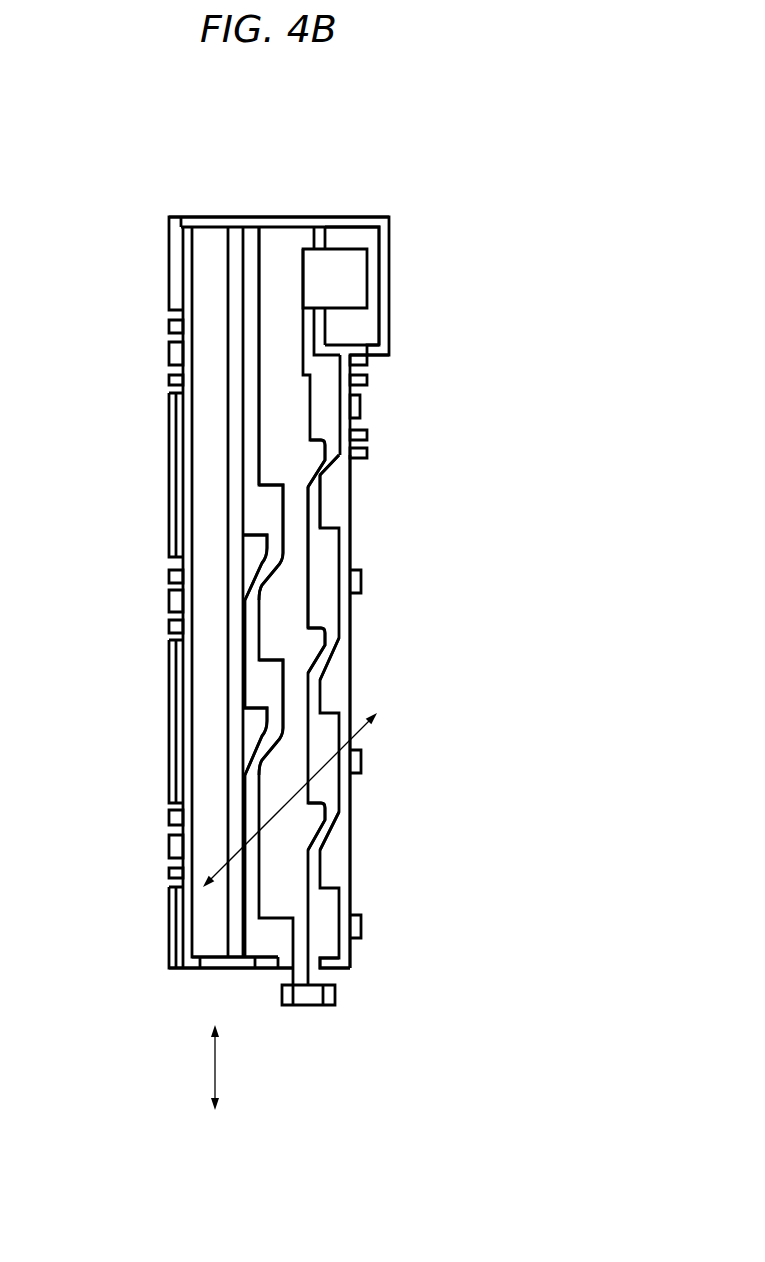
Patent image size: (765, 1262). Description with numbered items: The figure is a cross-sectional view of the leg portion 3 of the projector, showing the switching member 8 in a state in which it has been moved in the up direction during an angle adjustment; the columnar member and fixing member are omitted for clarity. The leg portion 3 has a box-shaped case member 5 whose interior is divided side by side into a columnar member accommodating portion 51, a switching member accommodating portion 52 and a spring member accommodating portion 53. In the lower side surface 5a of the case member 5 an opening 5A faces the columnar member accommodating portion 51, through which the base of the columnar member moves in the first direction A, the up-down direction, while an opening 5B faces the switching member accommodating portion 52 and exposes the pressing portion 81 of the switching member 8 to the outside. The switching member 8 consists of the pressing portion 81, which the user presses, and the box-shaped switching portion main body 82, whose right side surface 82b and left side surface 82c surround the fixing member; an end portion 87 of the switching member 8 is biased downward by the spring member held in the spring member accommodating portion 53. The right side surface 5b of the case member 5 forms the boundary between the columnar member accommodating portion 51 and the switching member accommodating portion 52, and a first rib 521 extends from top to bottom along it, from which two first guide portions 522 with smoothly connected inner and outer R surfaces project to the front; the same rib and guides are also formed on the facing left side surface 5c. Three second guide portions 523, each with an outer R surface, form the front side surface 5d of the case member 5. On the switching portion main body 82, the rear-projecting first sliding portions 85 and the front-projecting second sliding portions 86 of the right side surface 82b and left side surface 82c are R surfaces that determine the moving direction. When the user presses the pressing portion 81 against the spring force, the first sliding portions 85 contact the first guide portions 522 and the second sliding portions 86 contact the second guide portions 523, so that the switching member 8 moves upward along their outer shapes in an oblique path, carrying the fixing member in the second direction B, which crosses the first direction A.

The leg portion 3 is at (487, 160).
The case member 5 is at (200, 218).
The lower side surface 5a is at (192, 970).
The right side surface 5b is at (266, 243).
The left side surface 5c is at (264, 289).
The front side surface 5d is at (352, 568).
The opening 5A is at (228, 970).
The opening 5B is at (313, 973).
The columnar member accommodating portion 51 is at (205, 262).
The switching member accommodating portion 52 is at (298, 240).
The first rib 521 is at (237, 334).
The first guide portion 522 is at (268, 556).
The second guide portion 523 is at (328, 473).
The spring member accommodating portion 53 is at (362, 238).
The switching member 8 is at (272, 372).
The pressing portion 81 is at (310, 1006).
The switching portion main body 82 is at (292, 878).
The right side surface 82b is at (425, 506).
The left side surface 82c is at (292, 530).
The first sliding portion 85 is at (272, 574).
The second sliding portion 86 is at (323, 456).
The end portion 87 is at (312, 306).
The first direction A is at (227, 1067).
The second direction B is at (302, 798).